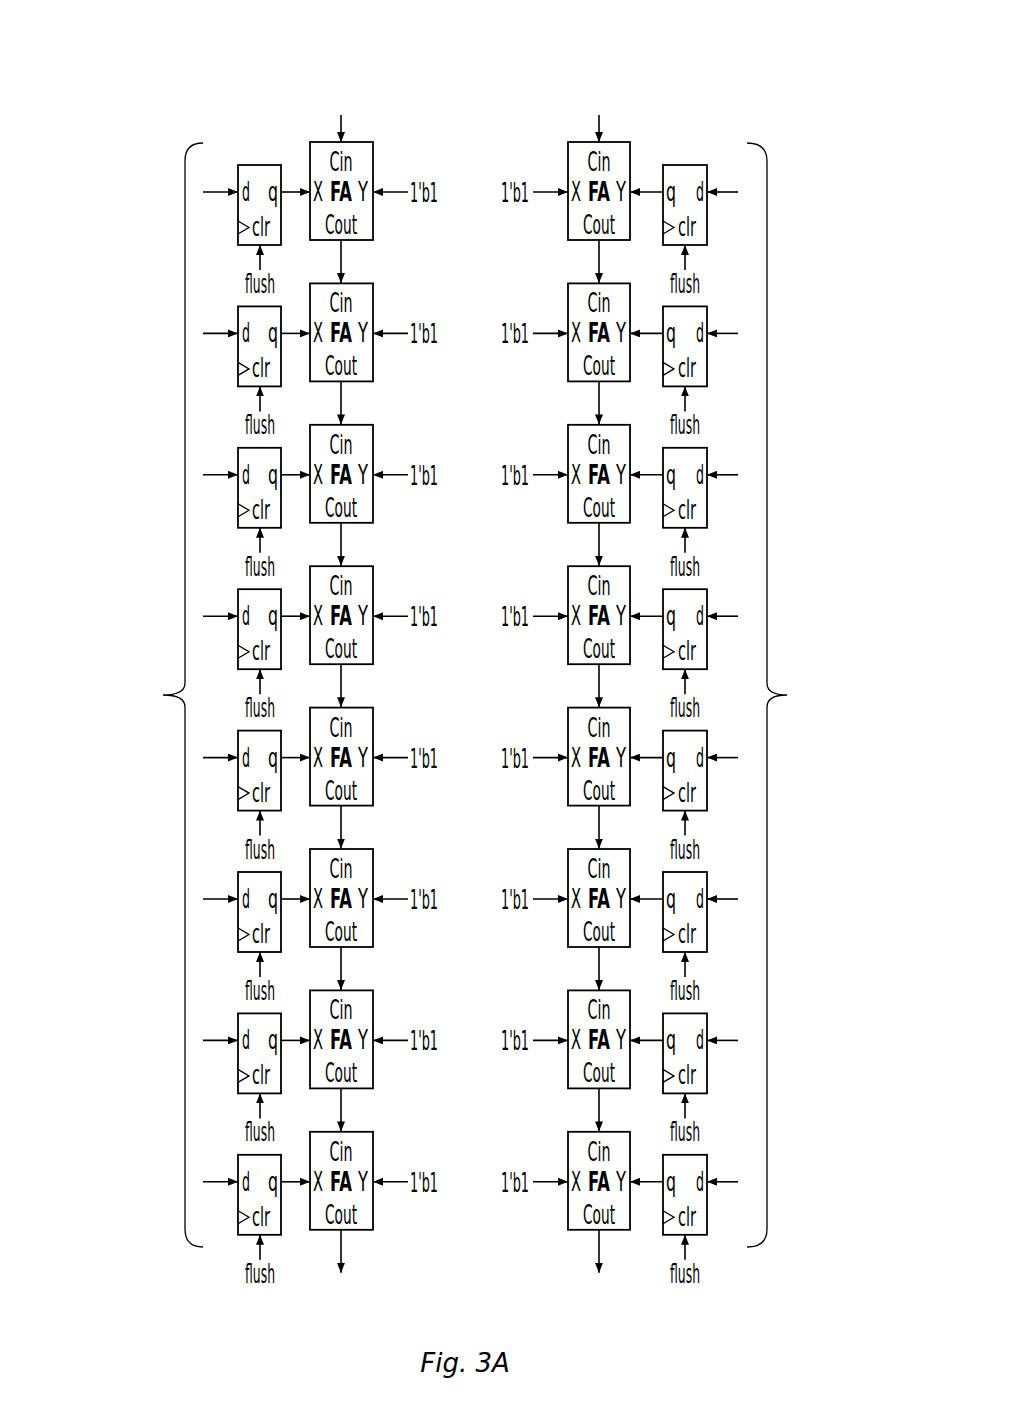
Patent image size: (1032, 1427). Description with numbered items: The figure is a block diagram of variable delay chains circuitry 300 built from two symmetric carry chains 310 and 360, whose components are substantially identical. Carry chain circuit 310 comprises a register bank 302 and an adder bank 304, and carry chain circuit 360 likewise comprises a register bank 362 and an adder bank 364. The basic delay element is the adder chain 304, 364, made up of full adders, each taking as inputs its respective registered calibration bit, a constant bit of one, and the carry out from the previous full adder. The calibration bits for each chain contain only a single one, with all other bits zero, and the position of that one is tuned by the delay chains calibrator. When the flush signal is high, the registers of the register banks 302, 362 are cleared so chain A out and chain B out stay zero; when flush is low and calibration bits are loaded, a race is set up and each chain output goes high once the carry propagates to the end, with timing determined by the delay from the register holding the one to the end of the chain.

The calibration circuit 300 is at (476, 656).
The carry chain circuit 310 is at (440, 66).
The carry chain circuit 360 is at (485, 66).
The register bank 302 is at (251, 165).
The adder bank 304 is at (362, 142).
The register bank 362 is at (695, 165).
The adder bank 364 is at (622, 142).